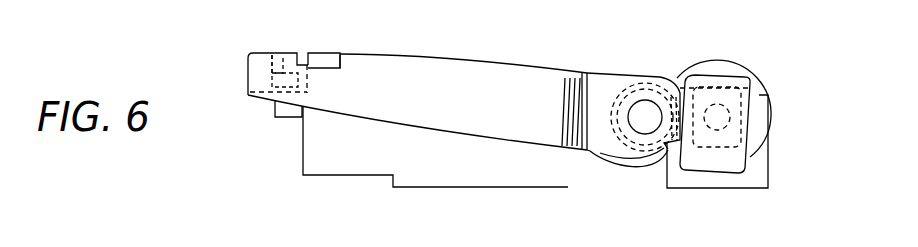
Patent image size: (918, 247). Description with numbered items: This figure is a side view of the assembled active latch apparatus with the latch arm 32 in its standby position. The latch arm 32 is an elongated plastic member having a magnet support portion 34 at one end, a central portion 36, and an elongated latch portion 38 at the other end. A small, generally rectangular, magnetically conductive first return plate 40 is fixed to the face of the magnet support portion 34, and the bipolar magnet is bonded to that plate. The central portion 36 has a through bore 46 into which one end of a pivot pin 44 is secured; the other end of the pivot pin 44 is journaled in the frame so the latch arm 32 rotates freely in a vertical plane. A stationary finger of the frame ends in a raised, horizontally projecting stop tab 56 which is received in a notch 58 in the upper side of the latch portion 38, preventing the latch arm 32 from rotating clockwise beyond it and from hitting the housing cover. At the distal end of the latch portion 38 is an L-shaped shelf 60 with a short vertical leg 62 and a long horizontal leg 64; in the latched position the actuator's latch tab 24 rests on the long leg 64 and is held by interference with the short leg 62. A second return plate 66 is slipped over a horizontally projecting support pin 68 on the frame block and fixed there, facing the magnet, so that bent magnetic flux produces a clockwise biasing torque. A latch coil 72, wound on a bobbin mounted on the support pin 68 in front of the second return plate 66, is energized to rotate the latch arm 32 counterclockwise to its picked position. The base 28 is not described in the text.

The latch tab 24 is at (290, 118).
The base 28 is at (303, 147).
The latch arm 32 is at (543, 68).
The magnet support portion 34 is at (747, 133).
The central portion 36 is at (627, 73).
The latch portion 38 is at (487, 100).
The first return plate 40 is at (733, 82).
The pivot pin 44 is at (647, 101).
The through bore 46 is at (631, 130).
The stop tab 56 is at (332, 53).
The notch 58 is at (344, 68).
The L-shaped shelf 60 is at (249, 83).
The short leg 62 is at (253, 66).
The long leg 64 is at (280, 57).
The second return plate 66 is at (755, 175).
The support pin 68 is at (712, 108).
The latch coil 72 is at (757, 78).